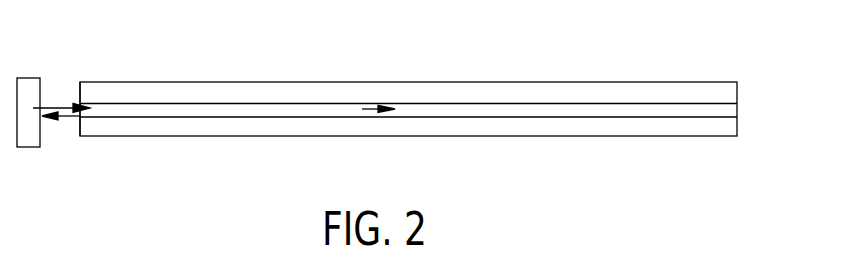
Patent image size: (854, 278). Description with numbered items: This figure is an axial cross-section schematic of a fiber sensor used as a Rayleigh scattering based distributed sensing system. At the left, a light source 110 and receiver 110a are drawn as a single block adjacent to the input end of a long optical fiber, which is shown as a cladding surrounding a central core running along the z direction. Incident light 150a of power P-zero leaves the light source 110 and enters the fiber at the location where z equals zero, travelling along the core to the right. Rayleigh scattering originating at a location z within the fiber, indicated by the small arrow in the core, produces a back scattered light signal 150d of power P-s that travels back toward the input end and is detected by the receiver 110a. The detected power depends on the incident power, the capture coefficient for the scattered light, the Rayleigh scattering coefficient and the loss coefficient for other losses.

The light source 110 is at (45, 80).
The receiver 110a is at (28, 78).
The incident light 150a is at (72, 112).
The back scattered light signal 150d is at (67, 118).